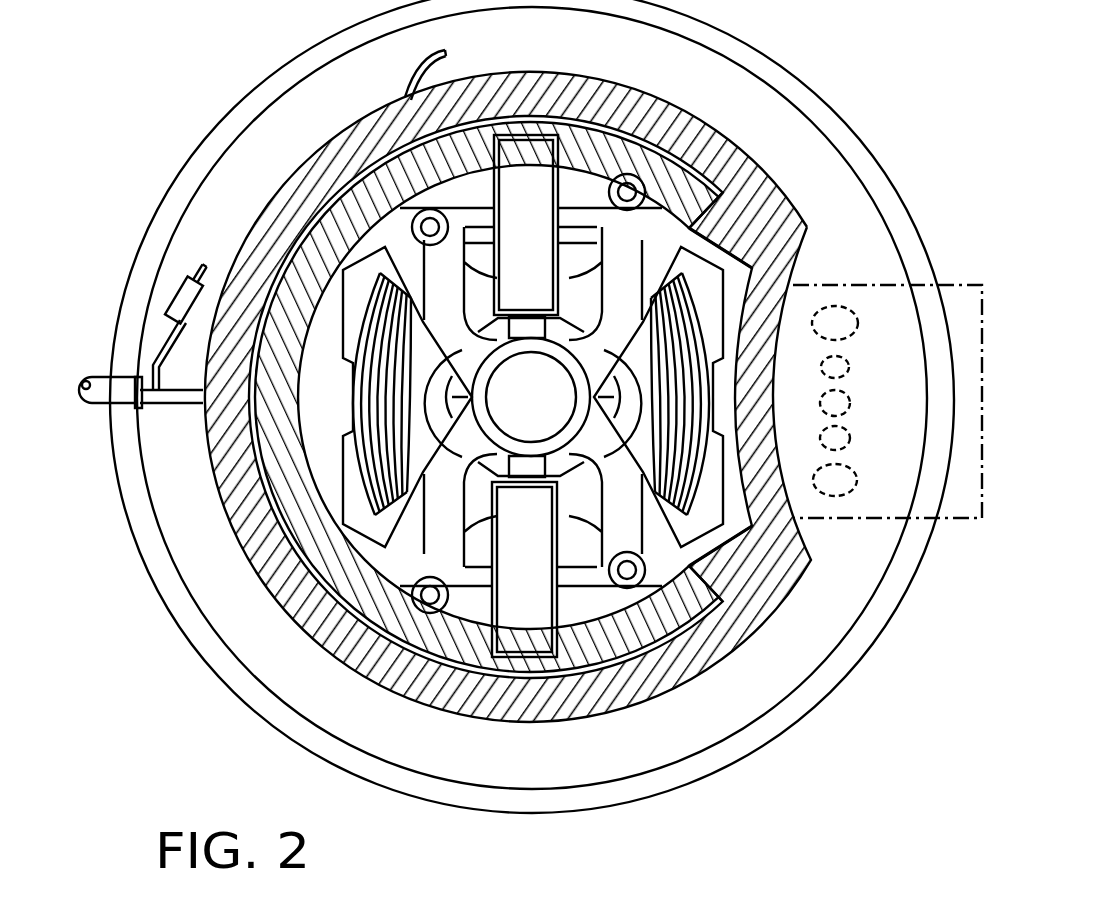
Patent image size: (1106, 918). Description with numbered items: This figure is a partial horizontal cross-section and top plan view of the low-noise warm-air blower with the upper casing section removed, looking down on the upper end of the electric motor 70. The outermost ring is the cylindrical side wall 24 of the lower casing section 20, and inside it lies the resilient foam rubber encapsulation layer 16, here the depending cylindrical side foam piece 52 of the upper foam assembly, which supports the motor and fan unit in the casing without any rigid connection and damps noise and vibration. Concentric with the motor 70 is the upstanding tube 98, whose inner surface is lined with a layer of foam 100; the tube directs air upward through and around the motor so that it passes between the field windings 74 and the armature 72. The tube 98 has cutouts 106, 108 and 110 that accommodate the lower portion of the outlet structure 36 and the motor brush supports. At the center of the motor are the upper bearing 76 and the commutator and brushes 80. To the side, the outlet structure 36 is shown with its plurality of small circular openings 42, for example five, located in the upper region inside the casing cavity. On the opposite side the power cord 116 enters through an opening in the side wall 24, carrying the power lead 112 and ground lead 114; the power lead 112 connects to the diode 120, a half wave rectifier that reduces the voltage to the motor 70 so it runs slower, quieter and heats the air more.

The resilient foam rubber encapsulation layer 16 is at (230, 532).
The lower casing section 20 is at (898, 616).
The cylindrical side wall 24 is at (128, 515).
The outlet structure 36 is at (985, 447).
The small circular openings 42 is at (857, 333).
The depending cylindrical side foam piece 52 is at (332, 606).
The electric motor 70 is at (645, 186).
The armature 72 is at (604, 398).
The field windings 74 is at (350, 337).
The upper bearing 76 is at (546, 426).
The commutator and brushes 80 is at (541, 206).
The upstanding tube 98 is at (336, 207).
The layer of foam 100 is at (283, 447).
The cutout 106 is at (745, 572).
The cutout 108 is at (513, 672).
The cutout 110 is at (530, 118).
The power lead 112 is at (160, 352).
The ground lead 114 is at (177, 402).
The power cord 116 is at (100, 408).
The diode 120 is at (187, 300).